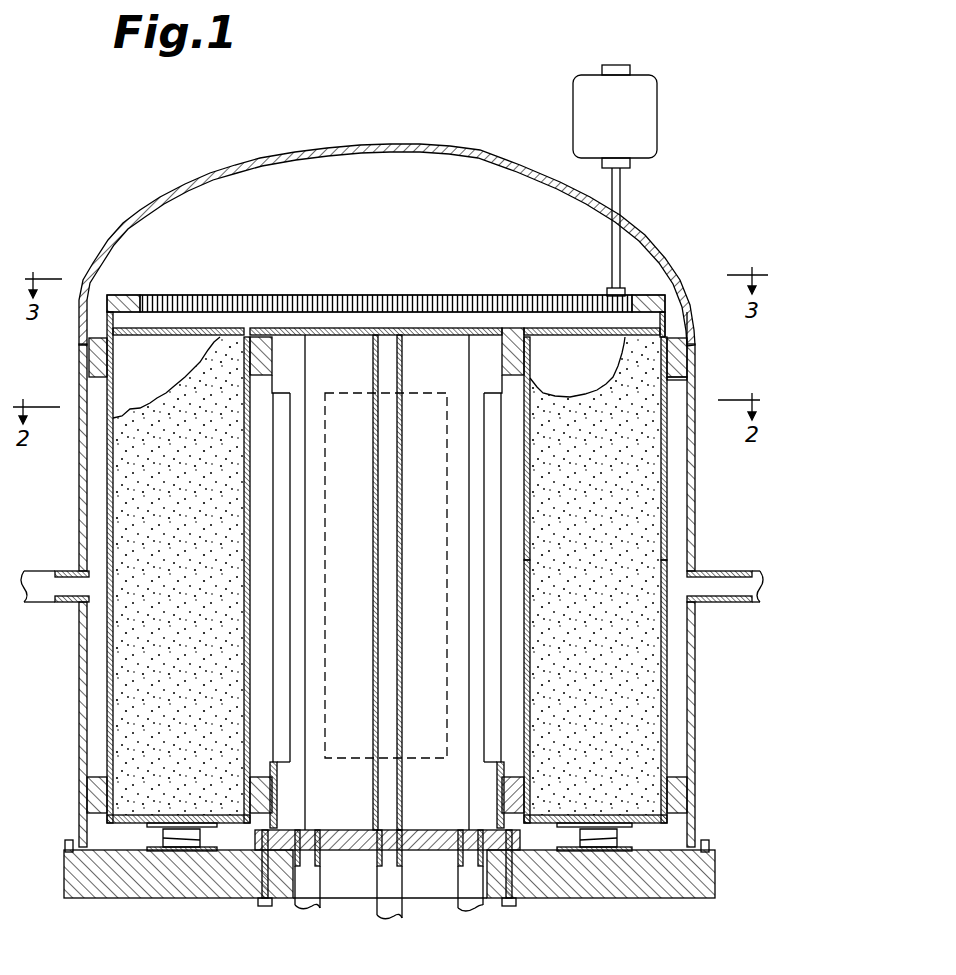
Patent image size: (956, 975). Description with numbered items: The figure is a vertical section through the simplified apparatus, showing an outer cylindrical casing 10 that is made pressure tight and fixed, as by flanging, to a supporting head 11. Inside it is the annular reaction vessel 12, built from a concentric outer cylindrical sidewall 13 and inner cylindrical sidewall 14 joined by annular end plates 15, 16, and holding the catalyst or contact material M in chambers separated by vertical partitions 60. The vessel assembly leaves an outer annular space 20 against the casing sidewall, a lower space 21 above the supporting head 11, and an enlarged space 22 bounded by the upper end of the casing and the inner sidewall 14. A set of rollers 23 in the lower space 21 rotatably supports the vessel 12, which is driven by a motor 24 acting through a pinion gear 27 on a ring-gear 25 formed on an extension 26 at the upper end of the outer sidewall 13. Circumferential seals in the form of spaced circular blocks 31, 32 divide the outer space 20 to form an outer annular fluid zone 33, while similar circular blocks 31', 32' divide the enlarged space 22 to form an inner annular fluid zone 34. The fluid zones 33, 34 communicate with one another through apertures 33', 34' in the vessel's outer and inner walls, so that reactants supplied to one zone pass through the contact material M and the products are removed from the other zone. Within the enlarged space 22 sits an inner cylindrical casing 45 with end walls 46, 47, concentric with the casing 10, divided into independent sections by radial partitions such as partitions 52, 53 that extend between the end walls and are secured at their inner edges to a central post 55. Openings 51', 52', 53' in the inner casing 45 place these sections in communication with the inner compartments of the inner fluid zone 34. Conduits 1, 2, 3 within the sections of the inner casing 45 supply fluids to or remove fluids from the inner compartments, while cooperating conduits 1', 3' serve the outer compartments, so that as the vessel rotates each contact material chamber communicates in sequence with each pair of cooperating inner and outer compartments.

The conduit 1 is at (485, 890).
The conduit 2 is at (397, 915).
The conduit 3 is at (301, 894).
The cooperating conduit 1' is at (725, 563).
The cooperating conduit 3' is at (48, 563).
The outer cylindrical casing 10 is at (692, 716).
The supporting head 11 is at (706, 871).
The reaction vessel 12 is at (688, 336).
The outer cylindrical sidewall 13 is at (688, 379).
The inner cylindrical sidewall 14 is at (531, 549).
The annular end plate 15 is at (553, 328).
The annular end plate 16 is at (658, 815).
The outer annular space 20 is at (676, 323).
The lower space 21 is at (220, 845).
The enlarged space 22 is at (400, 252).
The rollers 23 is at (165, 840).
The motor 24 is at (573, 99).
The ring-gear 25 is at (643, 295).
The extension 26 is at (666, 316).
The pinion gear 27 is at (607, 292).
The circular block 31 is at (401, 357).
The circular block 31' is at (405, 347).
The circular block 32 is at (392, 790).
The circular block 32' is at (388, 786).
The outer annular fluid zone 33 is at (391, 567).
The apertures 33' is at (711, 448).
The inner annular fluid zone 34 is at (389, 580).
The apertures 34' is at (558, 448).
The inner cylindrical casing 45 is at (506, 330).
The end wall 46 is at (432, 328).
The end wall 47 is at (418, 850).
The opening 51' is at (530, 601).
The radial partition 52 is at (451, 582).
The opening 52' is at (322, 575).
The radial partition 53 is at (321, 582).
The opening 53' is at (238, 601).
The central post 55 is at (402, 362).
The vertical partitions 60 is at (122, 387).
The contact material M is at (162, 452).